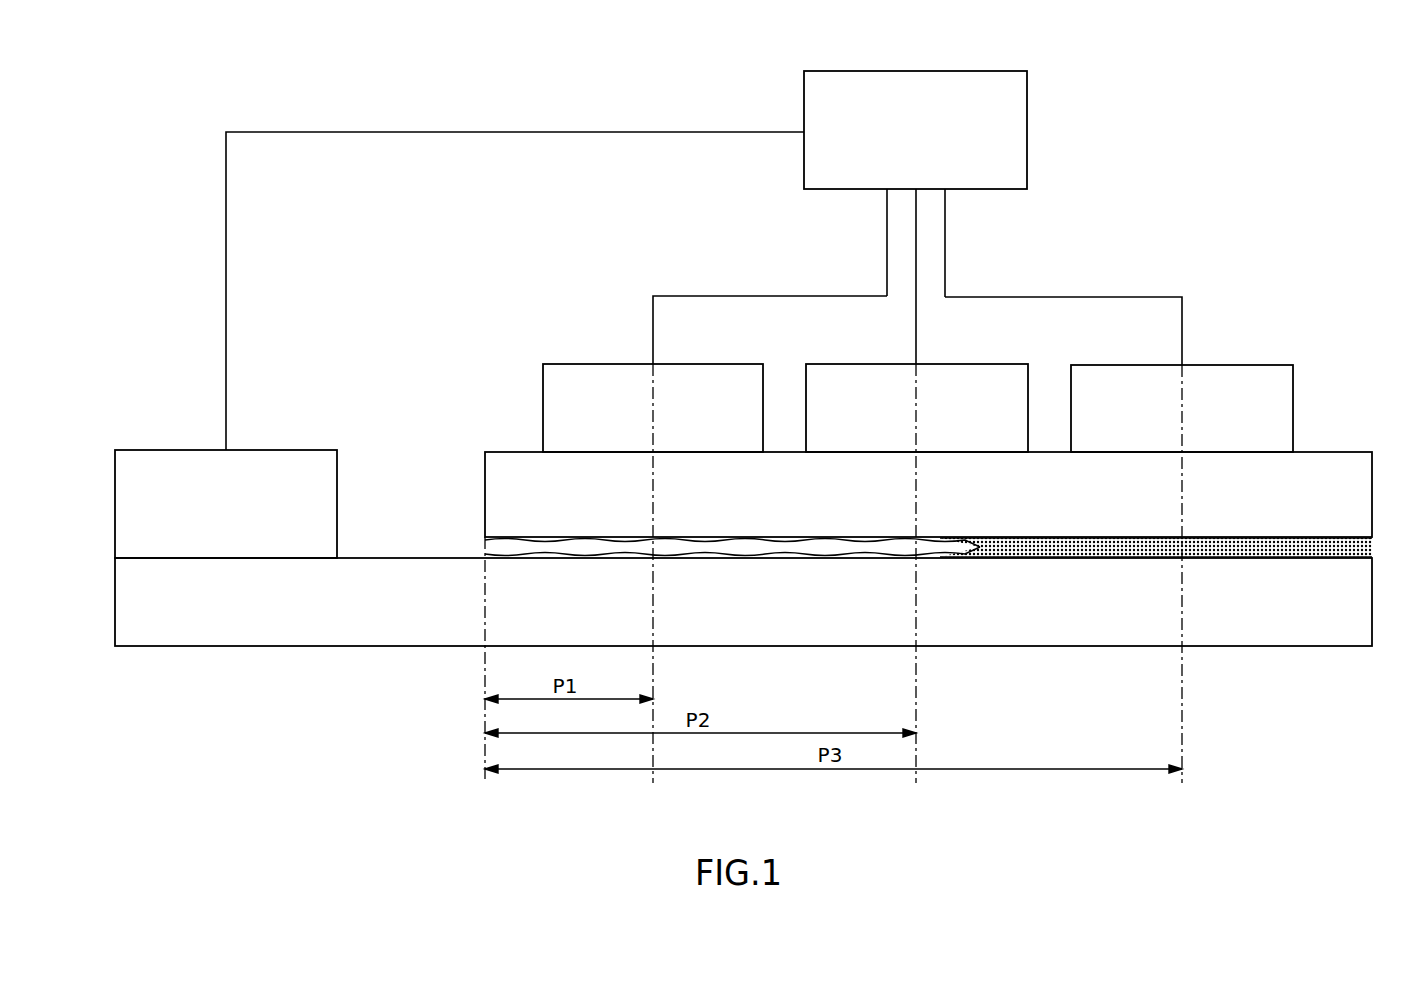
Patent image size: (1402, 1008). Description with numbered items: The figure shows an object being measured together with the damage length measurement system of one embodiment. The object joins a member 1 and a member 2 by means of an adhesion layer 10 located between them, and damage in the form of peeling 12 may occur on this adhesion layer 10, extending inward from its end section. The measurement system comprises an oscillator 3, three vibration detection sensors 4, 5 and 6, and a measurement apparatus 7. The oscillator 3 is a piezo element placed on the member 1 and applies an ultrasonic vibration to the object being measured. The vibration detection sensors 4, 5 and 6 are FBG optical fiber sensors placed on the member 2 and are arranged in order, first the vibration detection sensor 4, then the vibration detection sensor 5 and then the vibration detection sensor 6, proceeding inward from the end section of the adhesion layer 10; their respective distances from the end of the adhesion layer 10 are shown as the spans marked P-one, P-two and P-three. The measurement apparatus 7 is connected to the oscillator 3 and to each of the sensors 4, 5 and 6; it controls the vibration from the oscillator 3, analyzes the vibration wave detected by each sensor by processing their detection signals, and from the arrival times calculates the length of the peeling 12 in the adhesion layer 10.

The member 1 is at (215, 646).
The member 2 is at (1311, 452).
The oscillator 3 is at (272, 450).
The vibration detection sensor 4 is at (735, 364).
The vibration detection sensor 5 is at (983, 364).
The vibration detection sensor 6 is at (1275, 366).
The measurement apparatus 7 is at (1027, 101).
The adhesion layer 10 is at (1065, 552).
The peeling 12 is at (788, 548).